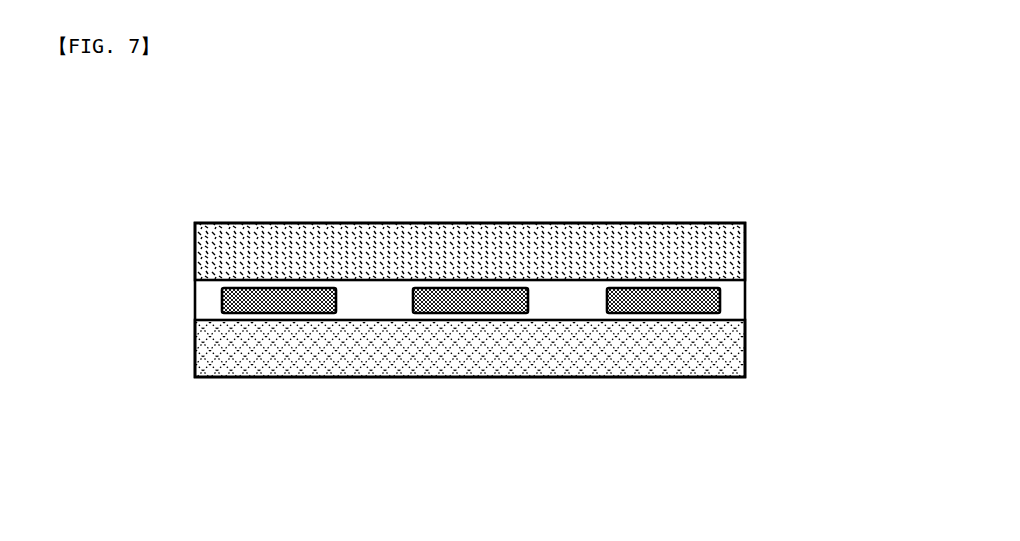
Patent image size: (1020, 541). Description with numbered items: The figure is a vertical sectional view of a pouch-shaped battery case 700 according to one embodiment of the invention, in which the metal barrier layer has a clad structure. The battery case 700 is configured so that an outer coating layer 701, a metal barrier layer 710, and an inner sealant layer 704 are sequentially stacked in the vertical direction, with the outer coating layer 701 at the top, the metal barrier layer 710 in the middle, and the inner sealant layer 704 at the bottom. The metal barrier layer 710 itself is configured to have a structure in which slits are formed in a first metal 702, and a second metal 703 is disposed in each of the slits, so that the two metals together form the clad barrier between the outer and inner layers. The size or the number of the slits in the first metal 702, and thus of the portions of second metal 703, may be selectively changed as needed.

The pouch-shaped battery case 700 is at (145, 183).
The outer coating layer 701 is at (745, 242).
The first metal 702 is at (517, 313).
The second metal 703 is at (663, 371).
The inner sealant layer 704 is at (745, 347).
The metal barrier layer 710 is at (572, 406).